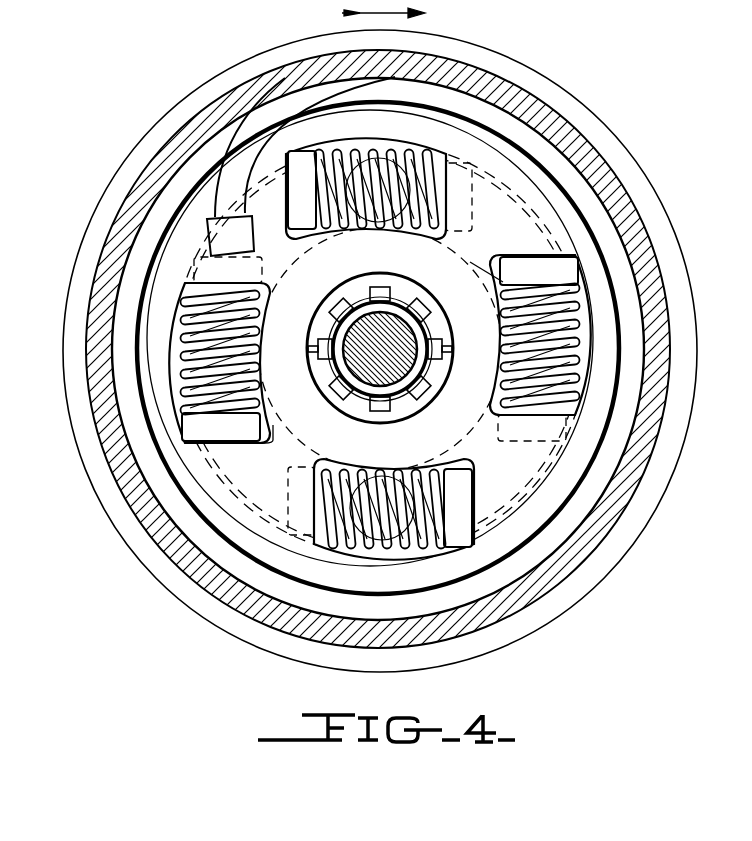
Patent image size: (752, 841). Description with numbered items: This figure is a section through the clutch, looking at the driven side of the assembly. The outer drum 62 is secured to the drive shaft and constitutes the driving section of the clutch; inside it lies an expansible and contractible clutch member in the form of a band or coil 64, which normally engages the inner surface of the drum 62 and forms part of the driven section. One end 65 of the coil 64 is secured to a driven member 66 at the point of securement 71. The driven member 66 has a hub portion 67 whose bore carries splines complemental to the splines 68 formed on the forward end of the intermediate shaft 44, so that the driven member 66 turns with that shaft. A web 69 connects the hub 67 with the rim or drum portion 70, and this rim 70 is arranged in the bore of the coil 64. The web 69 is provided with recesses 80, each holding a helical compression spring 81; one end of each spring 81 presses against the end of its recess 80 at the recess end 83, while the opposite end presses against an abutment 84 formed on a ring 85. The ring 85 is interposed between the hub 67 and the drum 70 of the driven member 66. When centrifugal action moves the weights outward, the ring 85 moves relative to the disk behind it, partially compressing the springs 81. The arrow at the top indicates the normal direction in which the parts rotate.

The intermediate shaft 44 is at (398, 390).
The drum 62 is at (93, 408).
The clutch coil 64 is at (587, 182).
The coil end 65 is at (230, 236).
The driven member 66 is at (218, 505).
The hub portion 67 is at (380, 349).
The splines 68 is at (343, 397).
The web 69 is at (380, 349).
The rim or drum portion 70 is at (148, 348).
The coil end securement 71 is at (245, 216).
The recess 80 is at (418, 232).
The helical compression spring 81 is at (370, 150).
The recess end 83 is at (440, 156).
The abutment 84 is at (302, 215).
The ring 85 is at (498, 282).